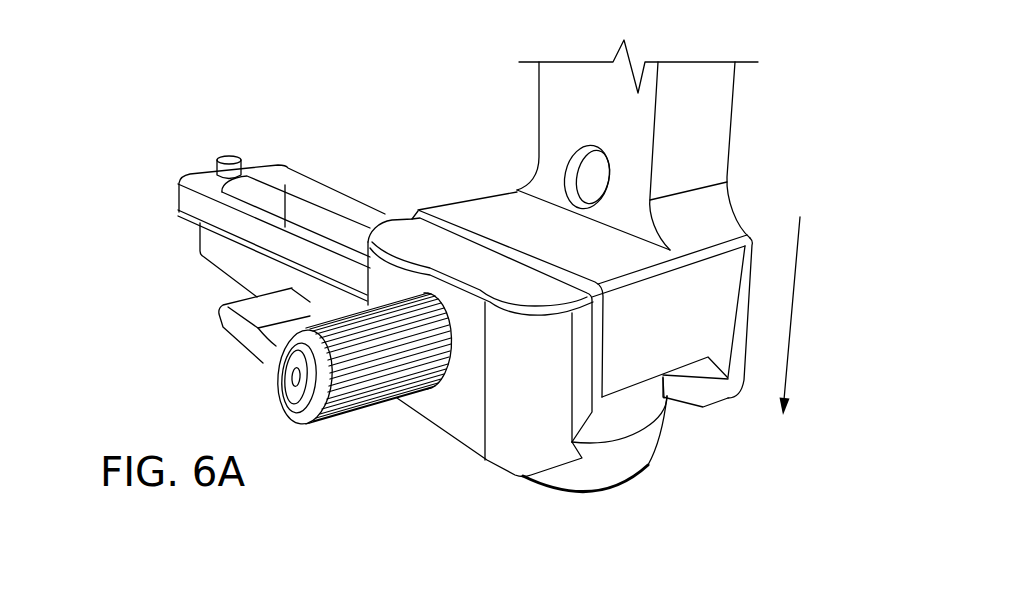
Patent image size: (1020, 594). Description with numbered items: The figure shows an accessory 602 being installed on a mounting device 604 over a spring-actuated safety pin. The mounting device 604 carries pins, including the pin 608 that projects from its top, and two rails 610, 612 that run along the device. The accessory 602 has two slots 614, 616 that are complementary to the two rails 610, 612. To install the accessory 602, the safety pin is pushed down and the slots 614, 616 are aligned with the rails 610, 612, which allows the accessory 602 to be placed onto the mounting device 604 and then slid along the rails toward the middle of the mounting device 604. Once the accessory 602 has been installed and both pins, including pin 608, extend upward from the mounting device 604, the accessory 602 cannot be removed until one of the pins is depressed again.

The accessory 602 is at (455, 407).
The mounting device 604 is at (182, 250).
The pin 608 is at (226, 155).
The rail 610 is at (674, 412).
The rail 612 is at (589, 446).
The slot 614 is at (711, 400).
The slot 616 is at (570, 487).